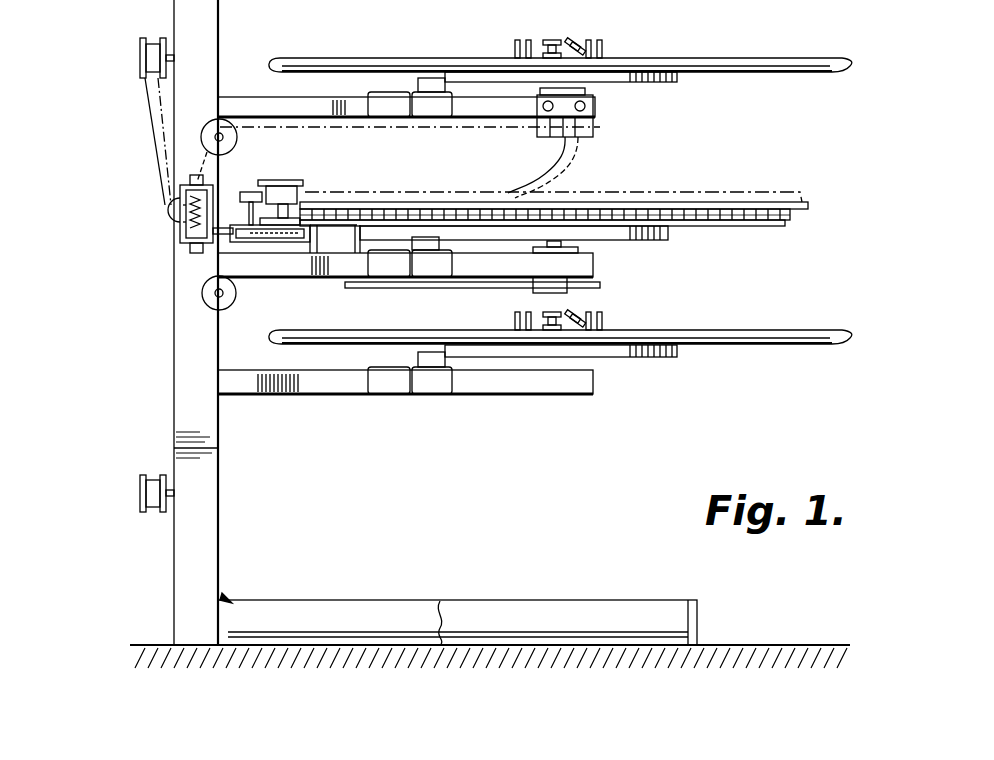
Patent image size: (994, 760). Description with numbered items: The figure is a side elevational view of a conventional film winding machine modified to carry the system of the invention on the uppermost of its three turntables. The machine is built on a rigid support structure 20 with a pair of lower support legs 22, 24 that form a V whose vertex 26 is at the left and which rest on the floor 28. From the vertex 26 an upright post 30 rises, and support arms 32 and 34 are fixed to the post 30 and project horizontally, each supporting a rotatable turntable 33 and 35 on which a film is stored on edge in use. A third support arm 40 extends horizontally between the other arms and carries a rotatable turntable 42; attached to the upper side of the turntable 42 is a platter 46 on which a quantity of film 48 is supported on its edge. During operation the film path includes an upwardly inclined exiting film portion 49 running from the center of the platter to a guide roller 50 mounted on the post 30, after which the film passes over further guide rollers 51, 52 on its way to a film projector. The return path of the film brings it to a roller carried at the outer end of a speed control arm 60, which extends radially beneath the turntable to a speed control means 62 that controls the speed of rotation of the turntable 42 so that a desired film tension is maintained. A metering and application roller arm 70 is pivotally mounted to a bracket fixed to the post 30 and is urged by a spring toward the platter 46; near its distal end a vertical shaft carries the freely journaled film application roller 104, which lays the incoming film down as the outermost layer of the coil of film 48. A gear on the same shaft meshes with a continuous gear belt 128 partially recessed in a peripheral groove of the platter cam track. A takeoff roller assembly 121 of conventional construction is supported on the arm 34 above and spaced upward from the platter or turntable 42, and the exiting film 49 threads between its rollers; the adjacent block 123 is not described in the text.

The rigid support structure 20 is at (165, 320).
The lower support leg 22 is at (378, 610).
The lower support leg 24 is at (570, 608).
The vertex 26 is at (222, 600).
The floor 28 is at (790, 645).
The upright post 30 is at (172, 276).
The support arm 32 is at (500, 385).
The rotatable turntable 33 is at (775, 346).
The support arm 34 is at (355, 118).
The rotatable turntable 35 is at (765, 72).
The third support arm 40 is at (594, 262).
The rotatable turntable 42 is at (700, 226).
The platter 46 is at (759, 228).
The film 48 is at (644, 190).
The exiting film portion 49 is at (420, 134).
The guide roller 50 is at (250, 114).
The guide roller 51 is at (158, 207).
The guide roller 52 is at (145, 52).
The speed control arm 60 is at (458, 290).
The speed control means 62 is at (568, 290).
The metering and application roller arm 70 is at (283, 242).
The film application roller 104 is at (290, 180).
The takeoff roller assembly 121 is at (573, 150).
The clamp block 123 is at (595, 107).
The gear belt 128 is at (428, 206).